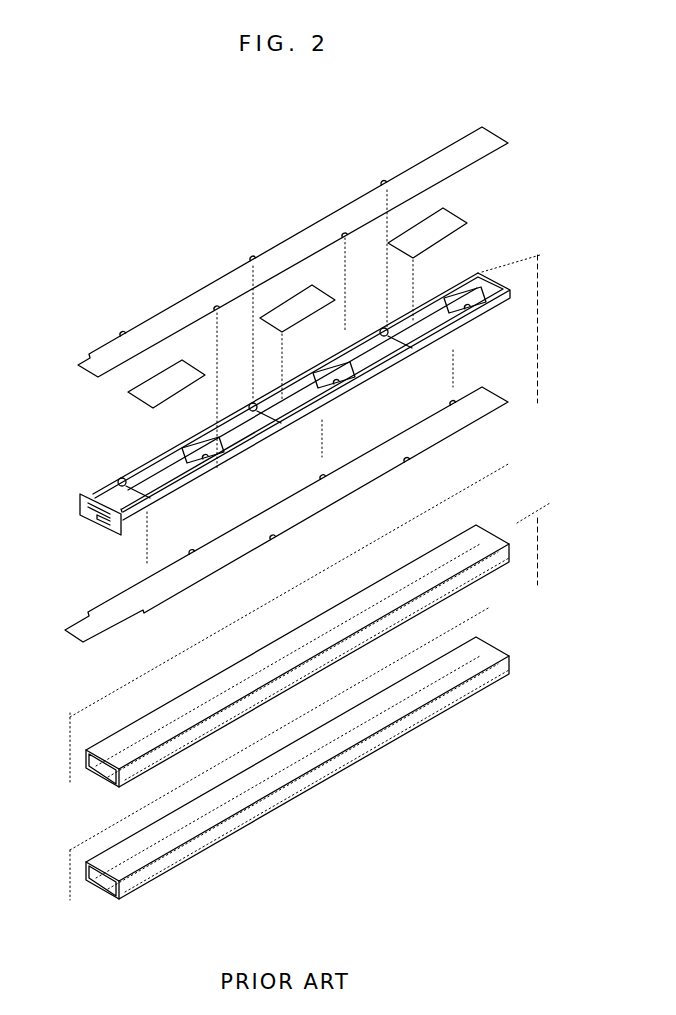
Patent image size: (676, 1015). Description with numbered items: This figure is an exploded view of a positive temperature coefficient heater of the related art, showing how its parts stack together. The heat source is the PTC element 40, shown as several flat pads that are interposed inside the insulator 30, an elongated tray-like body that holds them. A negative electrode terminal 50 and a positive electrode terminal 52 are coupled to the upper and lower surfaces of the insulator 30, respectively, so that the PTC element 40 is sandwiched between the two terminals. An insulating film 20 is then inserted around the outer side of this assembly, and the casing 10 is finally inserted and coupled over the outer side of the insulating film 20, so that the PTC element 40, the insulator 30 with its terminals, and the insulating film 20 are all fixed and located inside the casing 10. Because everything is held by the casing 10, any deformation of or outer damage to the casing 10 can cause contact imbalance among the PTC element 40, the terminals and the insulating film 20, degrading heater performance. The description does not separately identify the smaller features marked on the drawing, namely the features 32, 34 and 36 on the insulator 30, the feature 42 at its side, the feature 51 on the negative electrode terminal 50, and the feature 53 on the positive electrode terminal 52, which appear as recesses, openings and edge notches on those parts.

The casing 10 is at (306, 794).
The insulating film 20 is at (137, 719).
The insulator 30 is at (270, 392).
The recess 32 is at (470, 312).
The hole 34 is at (118, 480).
The end plate 36 is at (78, 516).
The PTC element 40 is at (217, 283).
The side wall 42 is at (482, 270).
The negative electrode terminal 50 is at (148, 315).
The notch 51 is at (343, 233).
The positive electrode terminal 52 is at (123, 590).
The notch 53 is at (405, 462).